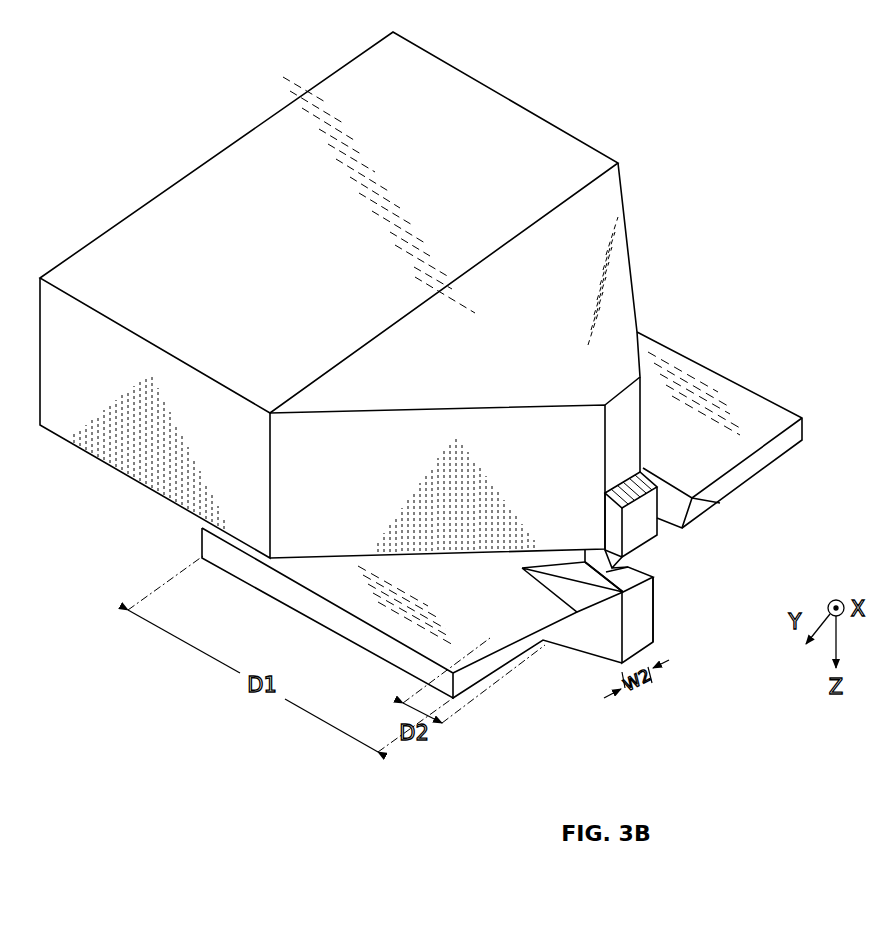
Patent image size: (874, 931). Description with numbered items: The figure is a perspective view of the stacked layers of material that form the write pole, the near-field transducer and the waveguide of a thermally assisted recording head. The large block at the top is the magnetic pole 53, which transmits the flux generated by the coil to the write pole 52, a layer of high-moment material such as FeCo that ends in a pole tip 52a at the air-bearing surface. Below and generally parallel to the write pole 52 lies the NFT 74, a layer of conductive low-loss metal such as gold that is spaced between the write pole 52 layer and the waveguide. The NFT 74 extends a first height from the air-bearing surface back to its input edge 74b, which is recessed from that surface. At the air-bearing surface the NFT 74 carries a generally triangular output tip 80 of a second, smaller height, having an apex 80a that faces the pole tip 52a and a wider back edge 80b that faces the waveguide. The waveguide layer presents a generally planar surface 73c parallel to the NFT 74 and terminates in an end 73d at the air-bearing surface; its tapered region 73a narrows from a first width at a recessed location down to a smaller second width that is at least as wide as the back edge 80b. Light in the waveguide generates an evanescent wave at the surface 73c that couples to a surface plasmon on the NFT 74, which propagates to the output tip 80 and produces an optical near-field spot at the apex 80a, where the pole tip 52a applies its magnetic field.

The magnetic pole 53 is at (287, 130).
The NFT 74 is at (740, 403).
The input edge 74b is at (202, 547).
The write pole 52 is at (647, 478).
The pole tip 52a is at (698, 515).
The output tip 80 is at (607, 567).
The apex 80a is at (633, 560).
The back edge 80b is at (640, 591).
The tapered region 73a is at (600, 643).
The planar surface 73c is at (545, 641).
The end 73d is at (638, 628).